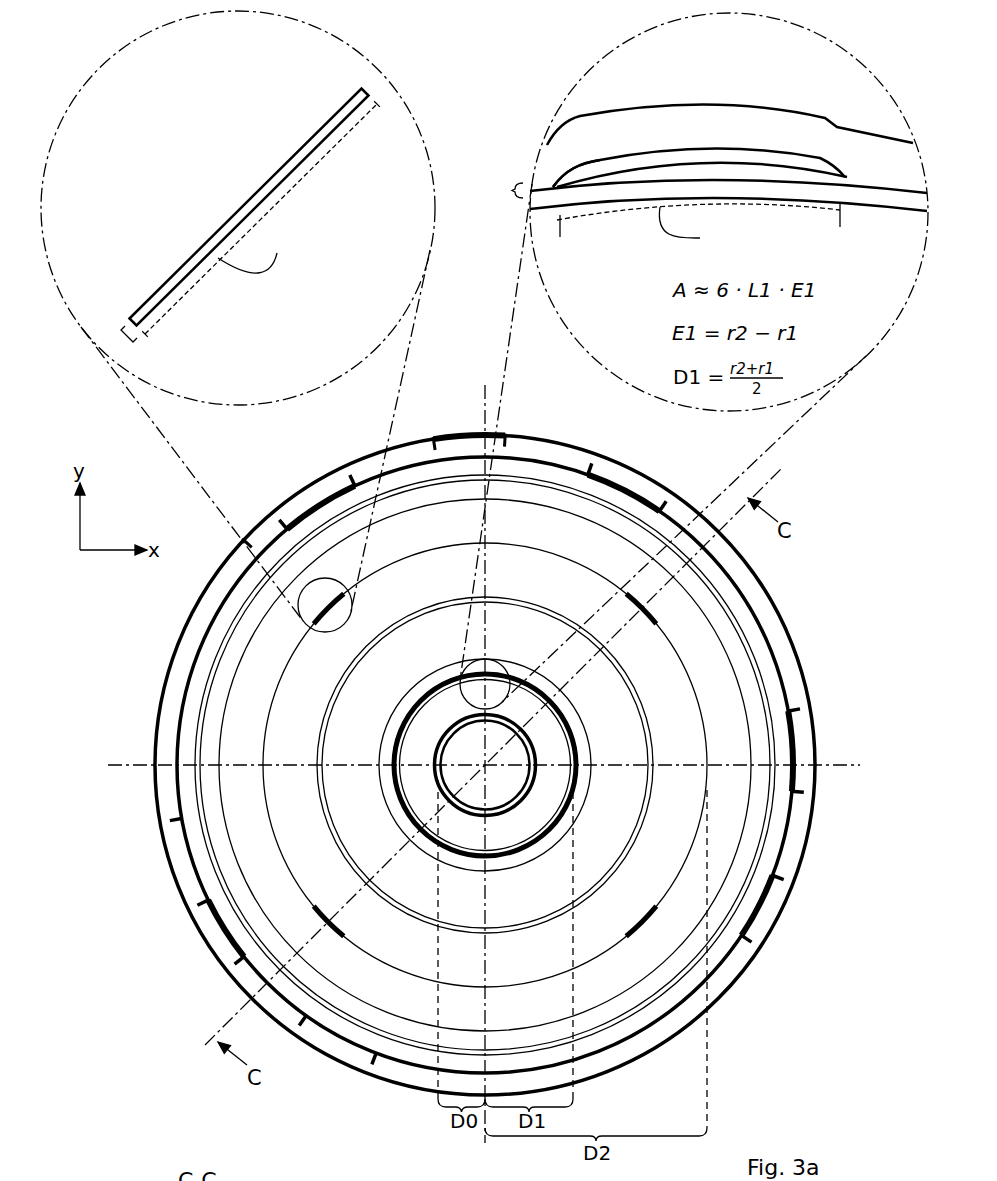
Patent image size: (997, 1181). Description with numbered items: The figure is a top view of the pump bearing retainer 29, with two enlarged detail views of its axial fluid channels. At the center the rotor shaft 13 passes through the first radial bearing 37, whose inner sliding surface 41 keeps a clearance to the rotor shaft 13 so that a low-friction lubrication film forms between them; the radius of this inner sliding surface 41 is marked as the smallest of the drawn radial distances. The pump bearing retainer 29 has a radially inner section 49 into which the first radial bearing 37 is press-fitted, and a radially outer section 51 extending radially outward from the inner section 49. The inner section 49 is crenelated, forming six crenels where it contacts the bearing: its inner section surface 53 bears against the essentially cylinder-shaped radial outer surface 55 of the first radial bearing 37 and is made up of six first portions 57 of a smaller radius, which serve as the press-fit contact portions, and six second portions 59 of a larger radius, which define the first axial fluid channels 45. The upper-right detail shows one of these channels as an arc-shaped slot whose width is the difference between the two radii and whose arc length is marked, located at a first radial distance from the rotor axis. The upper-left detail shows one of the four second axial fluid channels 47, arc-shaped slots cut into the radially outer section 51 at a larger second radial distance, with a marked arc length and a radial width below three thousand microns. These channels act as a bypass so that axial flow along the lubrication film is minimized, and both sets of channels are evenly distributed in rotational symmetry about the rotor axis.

The rotor shaft 13 is at (510, 753).
The pump bearing retainer 29 is at (852, 625).
The first radial bearing 37 is at (415, 792).
The inner sliding surface 41 is at (753, 947).
The first axial fluid channels 45 is at (780, 157).
The second axial fluid channels 47 is at (645, 918).
The radially inner section 49 is at (363, 742).
The radially outer section 51 is at (727, 798).
The inner section surface 53 is at (673, 173).
The radial outer surface 55 is at (647, 157).
The first portions 57 is at (891, 190).
The second portions 59 is at (698, 143).